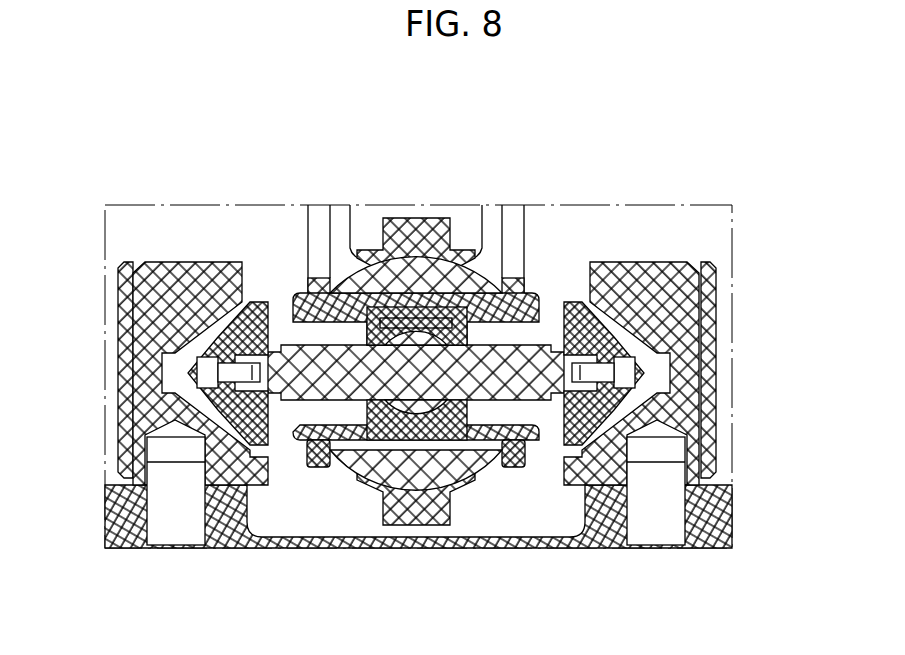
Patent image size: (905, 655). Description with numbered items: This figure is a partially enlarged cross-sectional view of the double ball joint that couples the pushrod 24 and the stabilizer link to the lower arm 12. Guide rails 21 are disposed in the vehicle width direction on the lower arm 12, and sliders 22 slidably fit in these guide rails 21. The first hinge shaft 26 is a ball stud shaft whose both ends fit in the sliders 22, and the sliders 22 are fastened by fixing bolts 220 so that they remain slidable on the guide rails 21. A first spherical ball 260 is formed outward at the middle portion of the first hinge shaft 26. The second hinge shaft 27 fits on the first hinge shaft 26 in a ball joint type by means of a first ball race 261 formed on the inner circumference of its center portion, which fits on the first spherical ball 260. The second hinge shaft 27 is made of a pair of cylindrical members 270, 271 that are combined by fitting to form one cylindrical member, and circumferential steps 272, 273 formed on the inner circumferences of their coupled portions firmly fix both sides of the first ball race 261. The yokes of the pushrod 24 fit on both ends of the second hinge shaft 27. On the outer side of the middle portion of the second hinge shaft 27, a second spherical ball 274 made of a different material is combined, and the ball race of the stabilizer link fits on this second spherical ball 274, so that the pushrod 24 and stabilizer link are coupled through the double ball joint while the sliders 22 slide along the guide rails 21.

The lower arm 12 is at (118, 440).
The guide rails 21 is at (160, 333).
The sliders 22 is at (236, 325).
The fixing bolts 220 is at (226, 392).
The pushrod 24 is at (319, 218).
The first hinge shaft 26 is at (532, 377).
The first spherical ball 260 is at (417, 345).
The first ball race 261 is at (392, 322).
The second hinge shaft 27 is at (286, 458).
The cylindrical member 270 is at (367, 405).
The cylindrical member 271 is at (492, 447).
The circumferential step 272 is at (359, 450).
The circumferential step 273 is at (457, 407).
The second spherical ball 274 is at (427, 268).